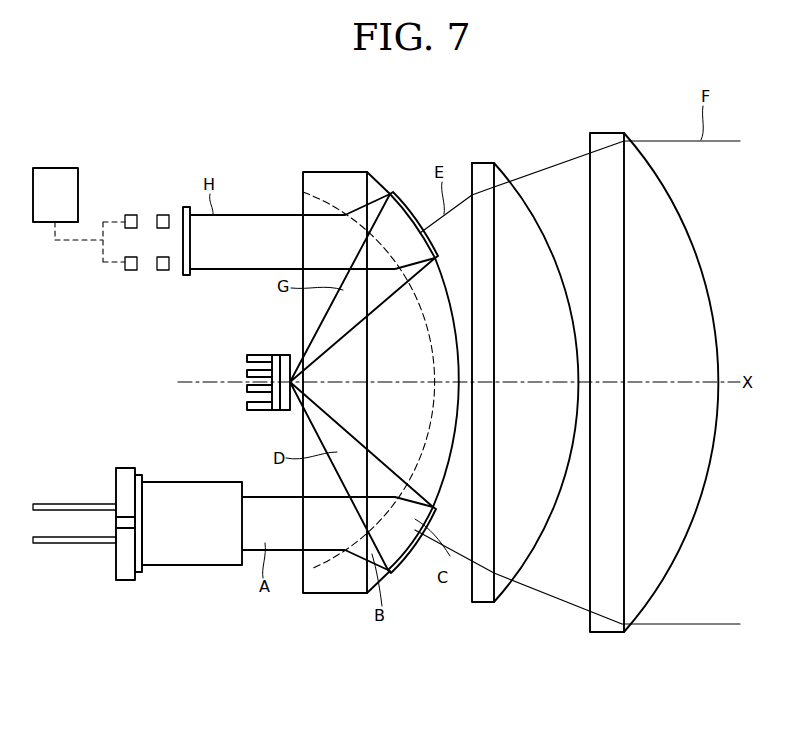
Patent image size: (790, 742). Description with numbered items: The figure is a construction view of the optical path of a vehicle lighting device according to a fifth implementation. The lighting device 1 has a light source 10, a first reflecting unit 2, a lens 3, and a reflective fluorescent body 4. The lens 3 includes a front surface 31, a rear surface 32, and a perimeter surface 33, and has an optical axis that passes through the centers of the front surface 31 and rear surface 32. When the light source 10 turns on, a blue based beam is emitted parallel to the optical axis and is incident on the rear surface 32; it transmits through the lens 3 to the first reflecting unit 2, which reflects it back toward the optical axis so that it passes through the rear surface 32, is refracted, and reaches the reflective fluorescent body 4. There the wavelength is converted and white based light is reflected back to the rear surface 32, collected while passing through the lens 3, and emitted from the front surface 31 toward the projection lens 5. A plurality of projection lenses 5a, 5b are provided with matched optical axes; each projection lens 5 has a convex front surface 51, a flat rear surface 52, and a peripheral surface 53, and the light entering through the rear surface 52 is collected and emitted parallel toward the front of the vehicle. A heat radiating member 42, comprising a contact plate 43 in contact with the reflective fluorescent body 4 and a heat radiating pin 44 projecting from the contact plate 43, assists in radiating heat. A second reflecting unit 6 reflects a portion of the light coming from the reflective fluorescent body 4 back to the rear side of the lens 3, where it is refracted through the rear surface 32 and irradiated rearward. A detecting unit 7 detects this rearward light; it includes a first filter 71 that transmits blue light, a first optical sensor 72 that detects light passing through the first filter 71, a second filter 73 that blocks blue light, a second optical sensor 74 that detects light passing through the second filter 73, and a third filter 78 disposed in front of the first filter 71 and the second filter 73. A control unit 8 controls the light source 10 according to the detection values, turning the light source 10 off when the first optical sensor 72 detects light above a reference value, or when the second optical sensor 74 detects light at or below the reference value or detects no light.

The lighting device 1 is at (137, 561).
The light source 10 is at (125, 587).
The first reflecting unit 2 is at (412, 550).
The lens 3 is at (359, 387).
The front surface 31 is at (382, 184).
The rear surface 32 is at (318, 206).
The perimeter surface 33 is at (333, 172).
The reflective fluorescent body 4 is at (282, 358).
The heat radiating member 42 is at (247, 342).
The contact plate 43 is at (272, 357).
The heat radiating pin 44 is at (246, 357).
The projection lens 5 is at (584, 409).
The projection lens 5a is at (514, 405).
The projection lens 5b is at (643, 603).
The front surface 51 is at (516, 190).
The rear surface 52 is at (472, 186).
The peripheral surface 53 is at (485, 163).
The second reflecting unit 6 is at (408, 214).
The detecting unit 7 is at (163, 137).
The first filter 71 is at (163, 215).
The first optical sensor 72 is at (131, 215).
The second filter 73 is at (163, 270).
The second optical sensor 74 is at (131, 270).
The third filter 78 is at (186, 276).
The control unit 8 is at (55, 168).